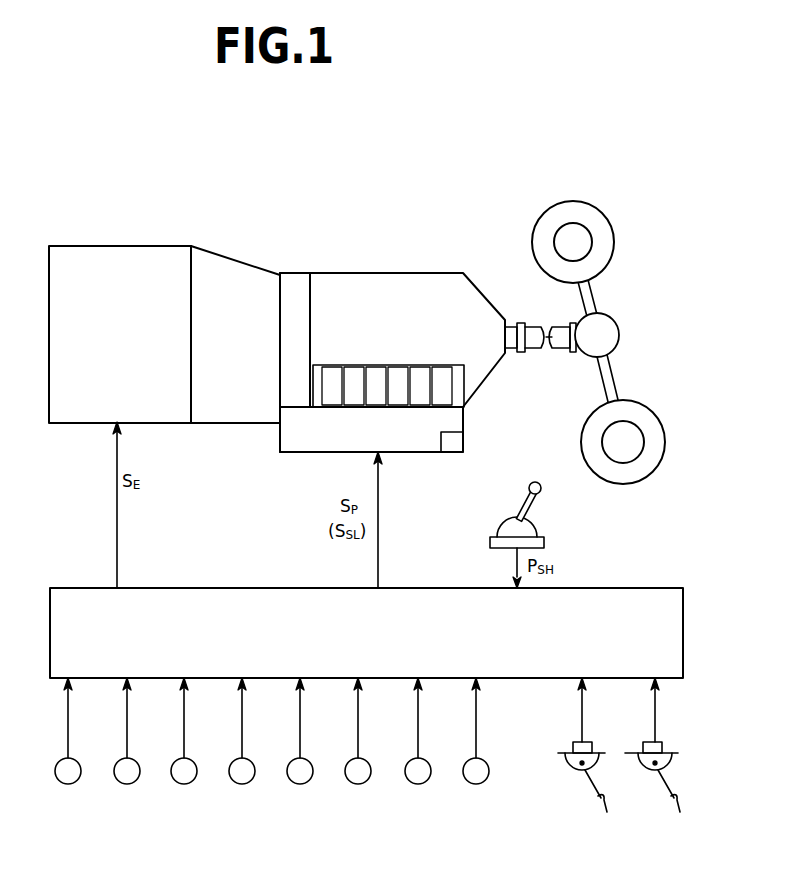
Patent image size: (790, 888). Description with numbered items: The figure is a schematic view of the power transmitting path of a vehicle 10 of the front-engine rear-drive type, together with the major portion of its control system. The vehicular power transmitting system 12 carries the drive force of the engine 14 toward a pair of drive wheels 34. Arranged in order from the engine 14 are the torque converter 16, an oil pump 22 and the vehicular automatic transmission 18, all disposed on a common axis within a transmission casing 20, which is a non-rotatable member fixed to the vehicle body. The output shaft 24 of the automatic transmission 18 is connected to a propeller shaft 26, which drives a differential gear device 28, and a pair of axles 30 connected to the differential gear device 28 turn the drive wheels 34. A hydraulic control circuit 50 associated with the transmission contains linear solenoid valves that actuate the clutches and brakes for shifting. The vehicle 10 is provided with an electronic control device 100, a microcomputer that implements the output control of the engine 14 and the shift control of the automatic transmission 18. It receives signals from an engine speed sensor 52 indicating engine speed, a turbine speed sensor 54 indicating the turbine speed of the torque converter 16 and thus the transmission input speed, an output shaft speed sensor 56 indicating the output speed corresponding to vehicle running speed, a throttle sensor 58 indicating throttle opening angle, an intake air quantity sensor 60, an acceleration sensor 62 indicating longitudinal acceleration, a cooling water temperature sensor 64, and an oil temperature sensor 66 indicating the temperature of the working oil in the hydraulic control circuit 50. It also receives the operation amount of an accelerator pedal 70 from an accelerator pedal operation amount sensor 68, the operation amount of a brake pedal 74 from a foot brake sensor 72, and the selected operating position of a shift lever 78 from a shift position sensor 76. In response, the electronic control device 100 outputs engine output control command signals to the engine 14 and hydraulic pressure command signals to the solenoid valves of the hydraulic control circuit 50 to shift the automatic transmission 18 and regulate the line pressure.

The vehicle 10 is at (453, 143).
The vehicular power transmitting system 12 is at (333, 202).
The engine 14 is at (135, 257).
The torque converter 16 is at (210, 261).
The vehicular automatic transmission 18 is at (372, 278).
The transmission casing 20 is at (473, 392).
The oil pump 22 is at (292, 279).
The output shaft 24 is at (513, 329).
The propeller shaft 26 is at (562, 350).
The differential gear device 28 is at (604, 331).
The axles 30 is at (590, 298).
The drive wheels 34 is at (573, 205).
The hydraulic control circuit 50 is at (400, 453).
The engine speed sensor 52 is at (68, 784).
The turbine speed sensor 54 is at (127, 784).
The output shaft speed sensor 56 is at (184, 784).
The throttle sensor 58 is at (242, 784).
The intake air quantity sensor 60 is at (300, 784).
The acceleration sensor 62 is at (358, 784).
The cooling water temperature sensor 64 is at (418, 784).
The oil temperature sensor 66 is at (476, 784).
The accelerator pedal operation amount sensor 68 is at (573, 746).
The accelerator pedal 70 is at (589, 792).
The foot brake sensor 72 is at (643, 746).
The brake pedal 74 is at (662, 792).
The shift position sensor 76 is at (493, 540).
The shift lever 78 is at (530, 483).
The electronic control device 100 is at (618, 600).